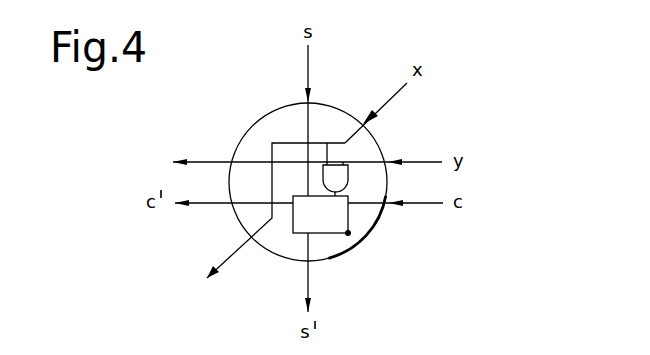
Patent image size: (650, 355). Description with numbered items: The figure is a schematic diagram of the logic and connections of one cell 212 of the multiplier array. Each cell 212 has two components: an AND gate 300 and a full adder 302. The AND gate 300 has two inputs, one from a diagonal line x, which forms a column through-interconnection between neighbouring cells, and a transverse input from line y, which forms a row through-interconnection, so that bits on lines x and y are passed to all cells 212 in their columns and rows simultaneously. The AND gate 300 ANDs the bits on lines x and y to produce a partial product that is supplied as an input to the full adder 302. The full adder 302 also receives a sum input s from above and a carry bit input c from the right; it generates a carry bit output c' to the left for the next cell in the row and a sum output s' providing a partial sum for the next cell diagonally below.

The cell 212 is at (435, 32).
The AND gate 300 is at (353, 179).
The full adder 302 is at (348, 233).